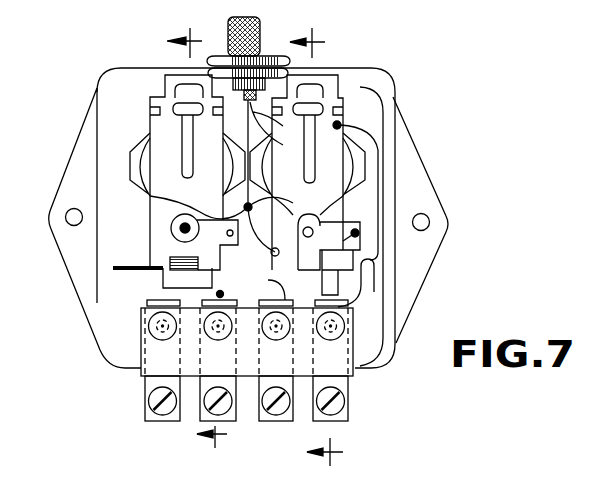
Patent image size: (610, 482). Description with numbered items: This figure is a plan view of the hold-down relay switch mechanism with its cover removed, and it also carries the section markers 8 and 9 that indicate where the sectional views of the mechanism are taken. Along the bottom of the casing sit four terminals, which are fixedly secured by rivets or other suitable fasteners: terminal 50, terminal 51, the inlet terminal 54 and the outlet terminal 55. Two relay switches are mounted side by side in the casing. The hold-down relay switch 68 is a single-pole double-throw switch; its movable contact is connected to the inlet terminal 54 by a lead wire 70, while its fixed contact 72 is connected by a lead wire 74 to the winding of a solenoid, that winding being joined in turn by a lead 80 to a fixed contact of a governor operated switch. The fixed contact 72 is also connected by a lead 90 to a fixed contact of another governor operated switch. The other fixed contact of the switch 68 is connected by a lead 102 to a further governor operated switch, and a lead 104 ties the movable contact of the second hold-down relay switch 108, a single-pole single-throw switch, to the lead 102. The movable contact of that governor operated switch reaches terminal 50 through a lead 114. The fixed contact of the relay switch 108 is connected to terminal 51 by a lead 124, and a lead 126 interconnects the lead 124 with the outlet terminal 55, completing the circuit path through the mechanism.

The section line 8- 8 is at (325, 248).
The section line 9- 9 is at (189, 243).
The terminal 50 is at (258, 421).
The terminal 51 is at (203, 418).
The inlet terminal 54 is at (315, 420).
The outlet terminal 55 is at (147, 419).
The hold-down relay switch 68 is at (402, 60).
The lead wire 70 is at (382, 107).
The fixed contact 72 is at (323, 247).
The lead wire 74 is at (360, 212).
The lead 80 is at (225, 136).
The lead 90 is at (364, 296).
The lead 102 is at (297, 198).
The lead 104 is at (217, 203).
The hold-down relay switch 108 is at (150, 125).
The lead 114 is at (277, 289).
The lead 124 is at (228, 294).
The lead 126 is at (220, 294).